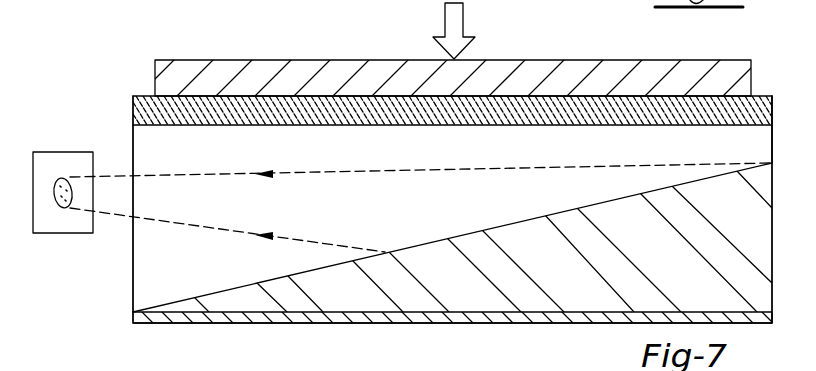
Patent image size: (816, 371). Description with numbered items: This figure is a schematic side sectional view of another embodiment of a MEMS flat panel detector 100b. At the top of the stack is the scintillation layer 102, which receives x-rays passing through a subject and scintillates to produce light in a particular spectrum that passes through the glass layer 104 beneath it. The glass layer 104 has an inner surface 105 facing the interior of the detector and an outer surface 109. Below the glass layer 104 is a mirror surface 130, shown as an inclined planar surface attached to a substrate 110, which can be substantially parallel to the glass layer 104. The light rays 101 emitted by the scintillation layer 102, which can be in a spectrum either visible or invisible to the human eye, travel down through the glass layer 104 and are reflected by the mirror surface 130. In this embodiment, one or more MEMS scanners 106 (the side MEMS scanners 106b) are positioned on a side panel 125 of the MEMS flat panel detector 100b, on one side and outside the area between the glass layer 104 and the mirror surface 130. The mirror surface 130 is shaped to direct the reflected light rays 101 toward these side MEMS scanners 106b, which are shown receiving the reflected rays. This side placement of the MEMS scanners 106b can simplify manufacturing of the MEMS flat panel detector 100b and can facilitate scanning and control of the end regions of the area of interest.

The MEMS flat panel detector 100b is at (551, 42).
The light rays 101 is at (293, 173).
The scintillation layer 102 is at (155, 85).
The glass layer 104 is at (133, 107).
The inner surface 105 is at (661, 125).
The MEMS scanner 106 is at (81, 225).
The side MEMS scanner 106b is at (61, 200).
The outer surface 109 is at (766, 96).
The substrate 110 is at (218, 323).
The side panel 125 is at (74, 189).
The mirror surface 130 is at (208, 295).